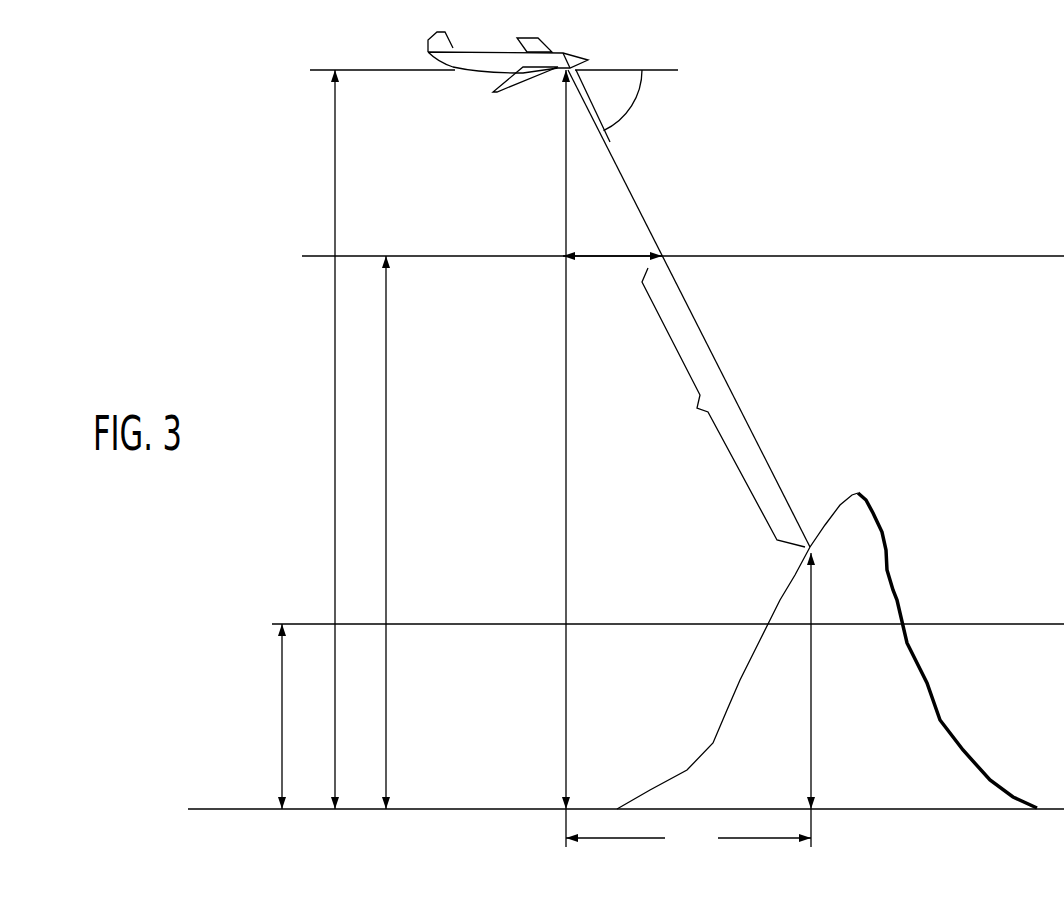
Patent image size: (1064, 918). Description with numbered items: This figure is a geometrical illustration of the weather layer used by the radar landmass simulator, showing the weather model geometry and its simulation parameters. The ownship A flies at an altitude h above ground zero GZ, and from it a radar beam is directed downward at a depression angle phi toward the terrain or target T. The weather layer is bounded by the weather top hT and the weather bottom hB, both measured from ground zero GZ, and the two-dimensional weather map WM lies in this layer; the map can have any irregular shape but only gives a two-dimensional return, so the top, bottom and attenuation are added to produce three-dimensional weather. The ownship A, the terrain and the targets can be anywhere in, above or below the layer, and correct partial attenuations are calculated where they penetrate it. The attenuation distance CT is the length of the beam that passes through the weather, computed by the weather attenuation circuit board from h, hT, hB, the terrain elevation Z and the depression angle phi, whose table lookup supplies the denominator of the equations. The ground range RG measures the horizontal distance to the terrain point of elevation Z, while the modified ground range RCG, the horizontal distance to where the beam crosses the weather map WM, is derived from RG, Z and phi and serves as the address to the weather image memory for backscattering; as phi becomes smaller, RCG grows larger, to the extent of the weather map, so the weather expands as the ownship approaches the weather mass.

The ownship altitude h is at (480, 433).
The weather top hT is at (660, 525).
The weather bottom hB is at (648, 710).
The modified ground range RCG is at (612, 439).
The attenuation distance CT is at (723, 407).
The terrain elevation Z is at (821, 676).
The ground range RG is at (688, 832).
The depression angle phi is at (653, 97).
The ownship A is at (508, 62).
The terrain or target T is at (872, 603).
The weather map WM is at (800, 255).
The ground zero GZ is at (219, 778).
The radar beam is at (689, 308).